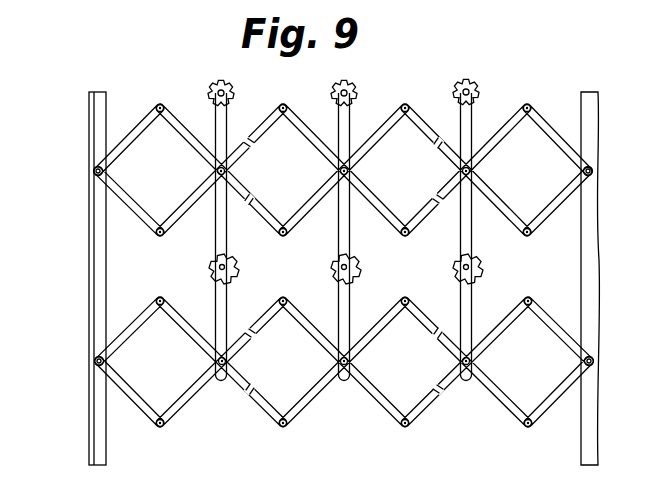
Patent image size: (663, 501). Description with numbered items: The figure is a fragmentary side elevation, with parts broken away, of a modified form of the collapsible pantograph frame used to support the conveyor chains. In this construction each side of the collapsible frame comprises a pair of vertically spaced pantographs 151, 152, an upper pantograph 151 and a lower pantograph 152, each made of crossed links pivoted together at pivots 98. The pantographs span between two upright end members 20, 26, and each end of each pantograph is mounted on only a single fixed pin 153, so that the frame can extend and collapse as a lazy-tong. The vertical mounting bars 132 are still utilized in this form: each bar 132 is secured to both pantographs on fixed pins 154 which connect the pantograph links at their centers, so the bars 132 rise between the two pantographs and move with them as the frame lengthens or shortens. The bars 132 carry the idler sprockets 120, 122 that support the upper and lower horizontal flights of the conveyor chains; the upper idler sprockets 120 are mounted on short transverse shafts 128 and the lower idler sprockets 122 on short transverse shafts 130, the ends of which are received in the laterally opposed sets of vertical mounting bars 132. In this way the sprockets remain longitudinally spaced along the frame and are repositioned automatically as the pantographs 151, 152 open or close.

The right post 20 is at (582, 279).
The left post 26 is at (92, 251).
The pivot 98 is at (157, 108).
The idler sprocket 120 is at (211, 88).
The idler sprocket 122 is at (327, 266).
The transverse shaft 128 is at (226, 93).
The transverse shaft 130 is at (210, 268).
The vertical mounting bar 132 is at (217, 238).
The pantograph 151 is at (264, 126).
The pantograph 152 is at (266, 393).
The fixed pin 153 is at (94, 172).
The fixed pin 154 is at (226, 171).